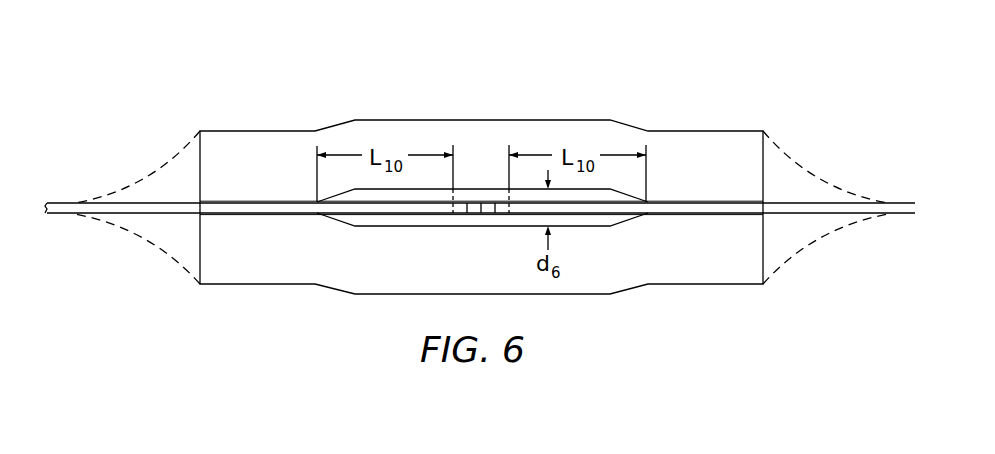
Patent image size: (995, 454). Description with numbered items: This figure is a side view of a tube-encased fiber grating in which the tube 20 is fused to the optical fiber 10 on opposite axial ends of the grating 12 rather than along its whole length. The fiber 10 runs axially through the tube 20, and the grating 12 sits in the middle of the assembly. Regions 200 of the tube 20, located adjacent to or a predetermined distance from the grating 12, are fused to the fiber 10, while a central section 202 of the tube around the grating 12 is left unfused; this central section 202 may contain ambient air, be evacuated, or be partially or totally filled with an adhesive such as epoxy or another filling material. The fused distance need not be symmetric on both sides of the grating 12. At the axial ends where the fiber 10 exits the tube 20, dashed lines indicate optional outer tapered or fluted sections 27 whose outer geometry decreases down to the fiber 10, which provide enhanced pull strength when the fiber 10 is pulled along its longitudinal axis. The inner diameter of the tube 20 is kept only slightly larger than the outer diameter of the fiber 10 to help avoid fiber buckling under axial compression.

The optical fiber 10 is at (108, 203).
The grating 12 is at (509, 228).
The tube 20 is at (268, 127).
The outer tapered section 27 is at (172, 160).
The fused regions 200 is at (257, 202).
The central section 202 is at (400, 227).